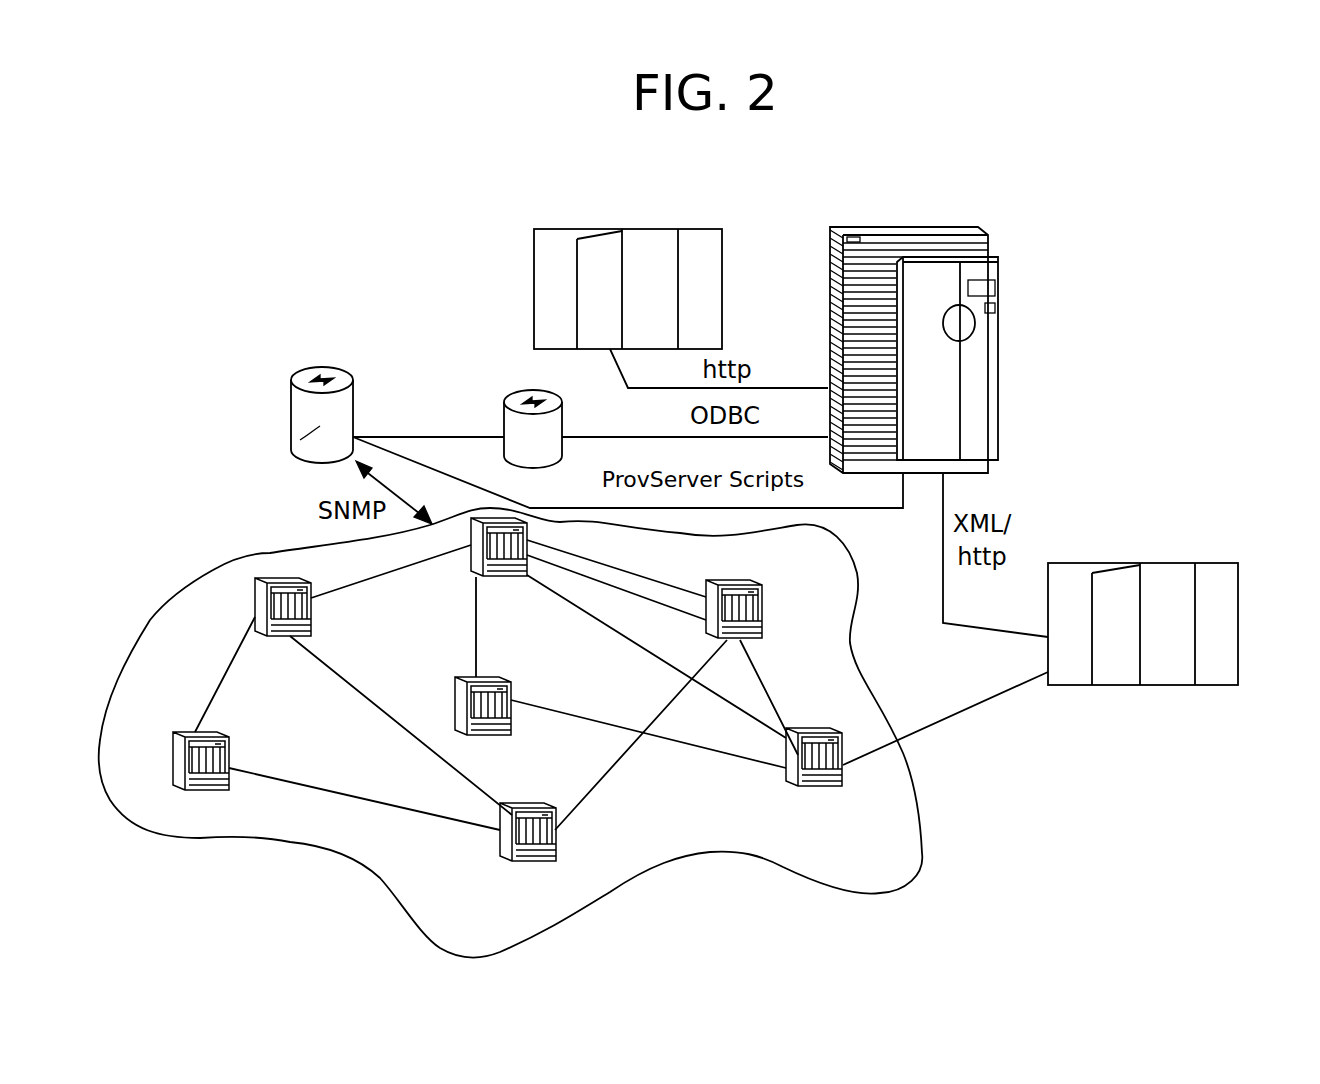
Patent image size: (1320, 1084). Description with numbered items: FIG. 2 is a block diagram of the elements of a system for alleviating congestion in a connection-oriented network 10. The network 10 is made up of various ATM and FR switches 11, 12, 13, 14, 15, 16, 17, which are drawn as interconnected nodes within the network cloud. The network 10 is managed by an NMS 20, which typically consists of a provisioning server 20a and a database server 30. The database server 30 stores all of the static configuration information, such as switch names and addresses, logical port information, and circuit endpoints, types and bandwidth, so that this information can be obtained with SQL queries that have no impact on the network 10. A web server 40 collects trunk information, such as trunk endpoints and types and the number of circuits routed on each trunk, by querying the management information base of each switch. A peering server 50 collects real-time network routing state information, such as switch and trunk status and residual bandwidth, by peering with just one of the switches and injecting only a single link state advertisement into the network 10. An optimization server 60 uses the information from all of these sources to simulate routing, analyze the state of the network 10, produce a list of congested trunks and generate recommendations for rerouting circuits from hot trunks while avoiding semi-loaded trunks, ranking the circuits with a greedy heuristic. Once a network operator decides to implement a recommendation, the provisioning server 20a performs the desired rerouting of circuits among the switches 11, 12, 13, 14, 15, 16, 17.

The connection-oriented network 10 is at (196, 374).
The switch 11 is at (185, 755).
The switch 12 is at (255, 598).
The switch 13 is at (471, 565).
The switch 14 is at (762, 607).
The switch 15 is at (820, 788).
The switch 16 is at (535, 861).
The switch 17 is at (483, 677).
The NMS 20 is at (322, 367).
The provisioning server 20a is at (310, 445).
The database server 30 is at (520, 390).
The web server 40 is at (640, 228).
The peering server 50 is at (1238, 597).
The optimization server 60 is at (998, 357).